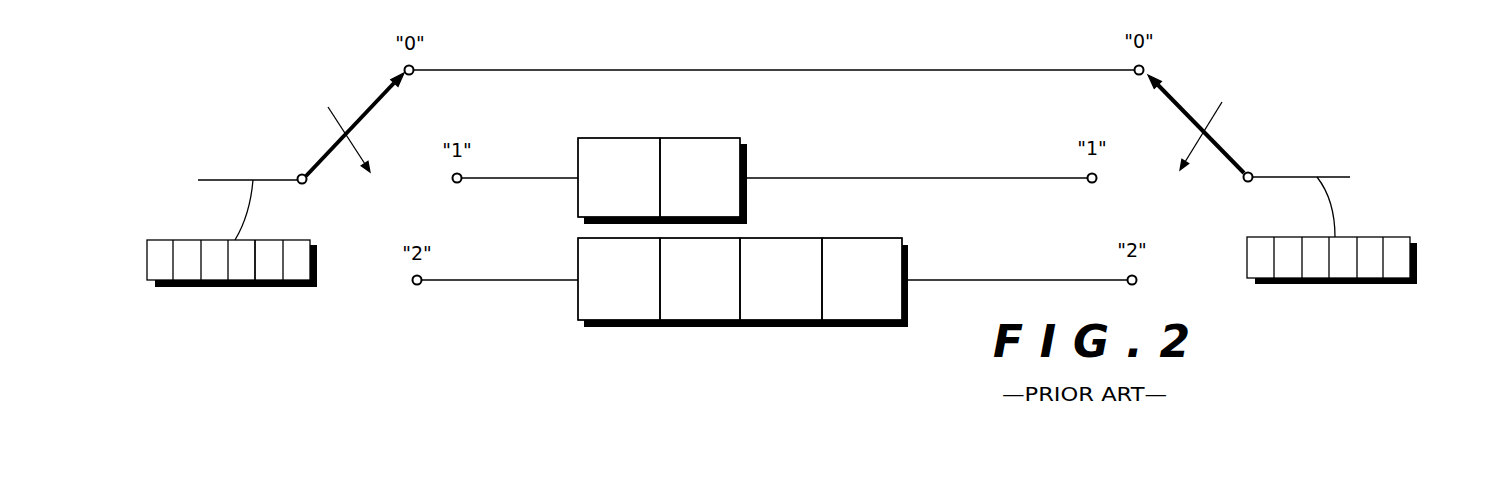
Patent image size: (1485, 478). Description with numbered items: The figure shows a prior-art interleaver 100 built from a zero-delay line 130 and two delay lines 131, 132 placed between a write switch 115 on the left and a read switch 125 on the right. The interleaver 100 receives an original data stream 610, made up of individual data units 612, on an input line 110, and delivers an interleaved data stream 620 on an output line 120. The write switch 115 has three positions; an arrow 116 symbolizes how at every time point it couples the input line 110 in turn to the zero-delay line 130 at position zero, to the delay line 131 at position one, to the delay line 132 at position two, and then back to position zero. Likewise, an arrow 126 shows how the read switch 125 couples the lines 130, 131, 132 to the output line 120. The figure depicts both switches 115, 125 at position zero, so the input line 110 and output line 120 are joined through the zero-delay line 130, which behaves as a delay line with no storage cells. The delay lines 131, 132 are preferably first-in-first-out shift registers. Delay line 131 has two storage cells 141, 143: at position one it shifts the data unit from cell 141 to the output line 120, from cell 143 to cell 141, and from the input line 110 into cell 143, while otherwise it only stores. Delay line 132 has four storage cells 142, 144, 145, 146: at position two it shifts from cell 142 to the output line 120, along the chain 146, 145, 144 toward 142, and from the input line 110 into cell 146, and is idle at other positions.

The interleaver 100 is at (1361, 75).
The input line 110 is at (231, 179).
The write switch 115 is at (377, 97).
The arrow 116 is at (333, 123).
The output line 120 is at (1332, 176).
The read switch 125 is at (1177, 100).
The arrow 126 is at (1213, 117).
The zero-delay line 130 is at (588, 68).
The delay line 131 is at (632, 137).
The delay line 132 is at (578, 255).
The storage cell 141 is at (708, 153).
The storage cell 142 is at (875, 253).
The storage cell 143 is at (597, 167).
The storage cell 144 is at (787, 255).
The storage cell 145 is at (708, 308).
The storage cell 146 is at (632, 310).
The original data stream 610 is at (192, 240).
The data unit 612 is at (268, 277).
The interleaved data stream 620 is at (1395, 237).